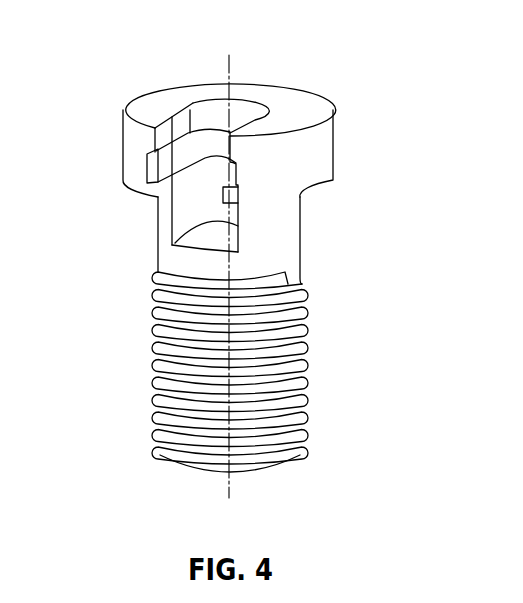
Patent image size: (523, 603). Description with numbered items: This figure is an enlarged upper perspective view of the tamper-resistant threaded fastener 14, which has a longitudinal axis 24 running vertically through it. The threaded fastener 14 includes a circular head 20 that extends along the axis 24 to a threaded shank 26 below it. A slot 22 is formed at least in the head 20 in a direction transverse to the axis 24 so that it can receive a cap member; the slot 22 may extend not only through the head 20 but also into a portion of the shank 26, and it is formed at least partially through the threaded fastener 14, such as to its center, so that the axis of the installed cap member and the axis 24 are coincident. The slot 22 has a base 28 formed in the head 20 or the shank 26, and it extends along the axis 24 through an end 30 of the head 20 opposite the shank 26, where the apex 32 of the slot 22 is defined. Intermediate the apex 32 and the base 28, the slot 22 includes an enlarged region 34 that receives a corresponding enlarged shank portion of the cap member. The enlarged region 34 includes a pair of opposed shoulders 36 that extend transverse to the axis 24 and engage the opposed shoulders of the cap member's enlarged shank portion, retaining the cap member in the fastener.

The threaded fastener 14 is at (362, 72).
The circular head 20 is at (242, 134).
The slot 22 is at (116, 186).
The longitudinal axis 24 is at (230, 62).
The threaded shank 26 is at (302, 228).
The base 28 is at (203, 250).
The end 30 is at (142, 92).
The apex 32 is at (172, 117).
The enlarged region 34 is at (147, 163).
The opposed shoulders 36 is at (237, 184).